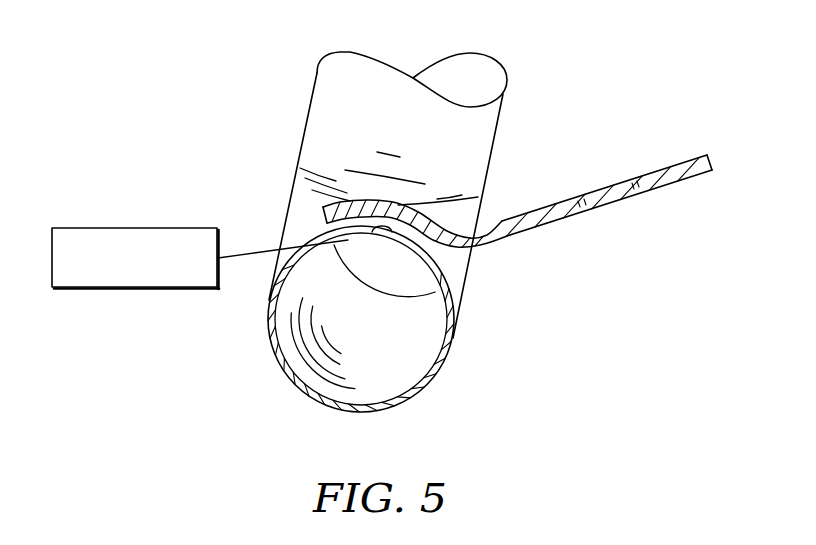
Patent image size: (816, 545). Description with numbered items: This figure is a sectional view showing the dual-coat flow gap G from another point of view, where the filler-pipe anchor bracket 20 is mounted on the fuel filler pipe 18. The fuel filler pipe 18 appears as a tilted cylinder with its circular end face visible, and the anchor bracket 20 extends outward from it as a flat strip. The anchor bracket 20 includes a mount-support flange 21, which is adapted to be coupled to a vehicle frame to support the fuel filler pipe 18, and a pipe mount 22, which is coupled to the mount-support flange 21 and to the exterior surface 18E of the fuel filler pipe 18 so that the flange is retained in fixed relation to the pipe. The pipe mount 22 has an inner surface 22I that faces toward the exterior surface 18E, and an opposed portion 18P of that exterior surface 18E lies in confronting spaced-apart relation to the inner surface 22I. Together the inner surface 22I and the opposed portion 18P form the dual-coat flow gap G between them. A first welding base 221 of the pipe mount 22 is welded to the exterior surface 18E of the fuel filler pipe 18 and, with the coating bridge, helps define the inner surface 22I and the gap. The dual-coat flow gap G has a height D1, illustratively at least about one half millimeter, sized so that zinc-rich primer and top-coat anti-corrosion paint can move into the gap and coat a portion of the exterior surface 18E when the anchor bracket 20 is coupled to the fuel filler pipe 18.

The fuel filler pipe 18 is at (512, 104).
The exterior surface 18E is at (322, 122).
The opposed portion 18P is at (389, 236).
The filler-pipe anchor bracket 20 is at (681, 149).
The mount-support flange 21 is at (566, 227).
The pipe mount 22 is at (389, 181).
The inner surface 22I is at (431, 208).
The first welding base 221 is at (327, 223).
The height D1 is at (347, 267).
The dual-coat flow gap G is at (118, 228).